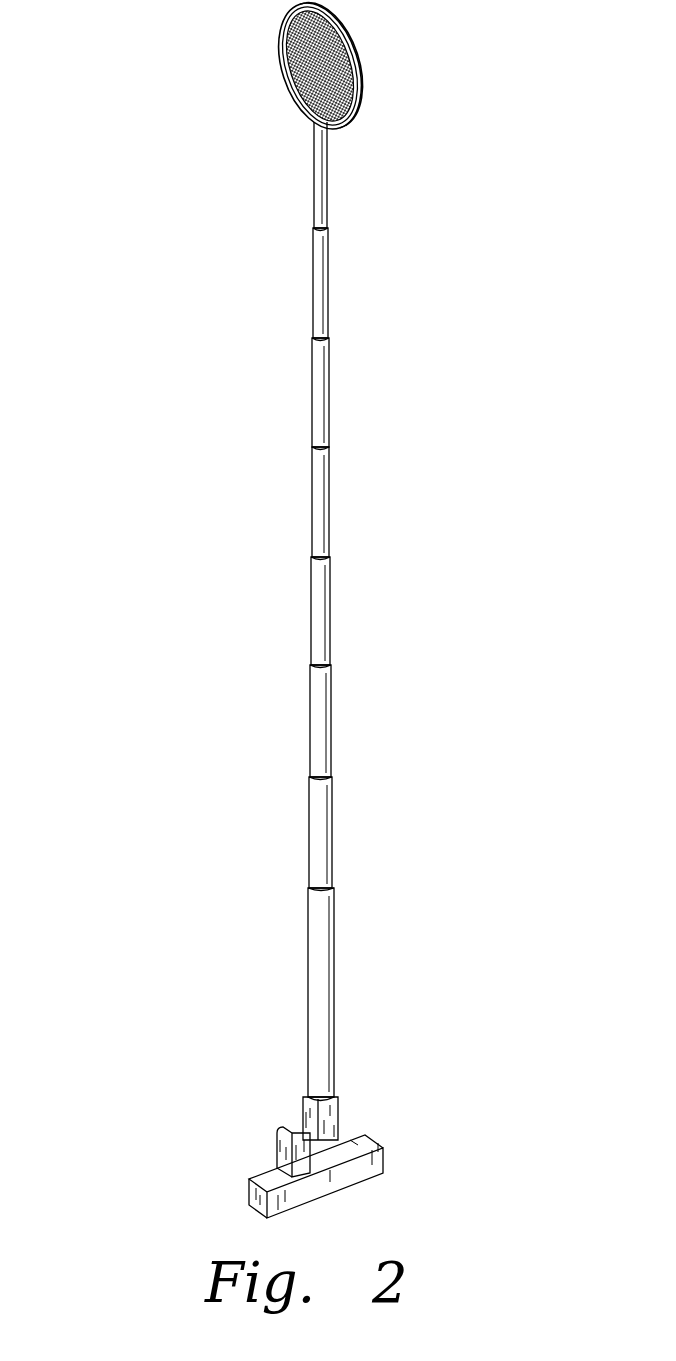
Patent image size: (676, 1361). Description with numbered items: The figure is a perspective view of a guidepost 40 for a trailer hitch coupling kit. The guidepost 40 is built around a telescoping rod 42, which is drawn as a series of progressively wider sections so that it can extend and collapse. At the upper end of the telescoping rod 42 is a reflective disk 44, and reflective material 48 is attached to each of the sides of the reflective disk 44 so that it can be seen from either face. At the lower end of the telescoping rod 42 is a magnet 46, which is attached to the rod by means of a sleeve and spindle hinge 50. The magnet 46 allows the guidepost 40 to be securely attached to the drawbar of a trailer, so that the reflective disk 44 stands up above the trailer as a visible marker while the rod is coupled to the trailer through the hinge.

The guidepost 40 is at (155, 467).
The telescoping rod 42 is at (323, 502).
The reflective disk 44 is at (352, 70).
The magnet 46 is at (383, 1157).
The reflective material 48 is at (295, 67).
The sleeve and spindle hinge 50 is at (303, 1110).